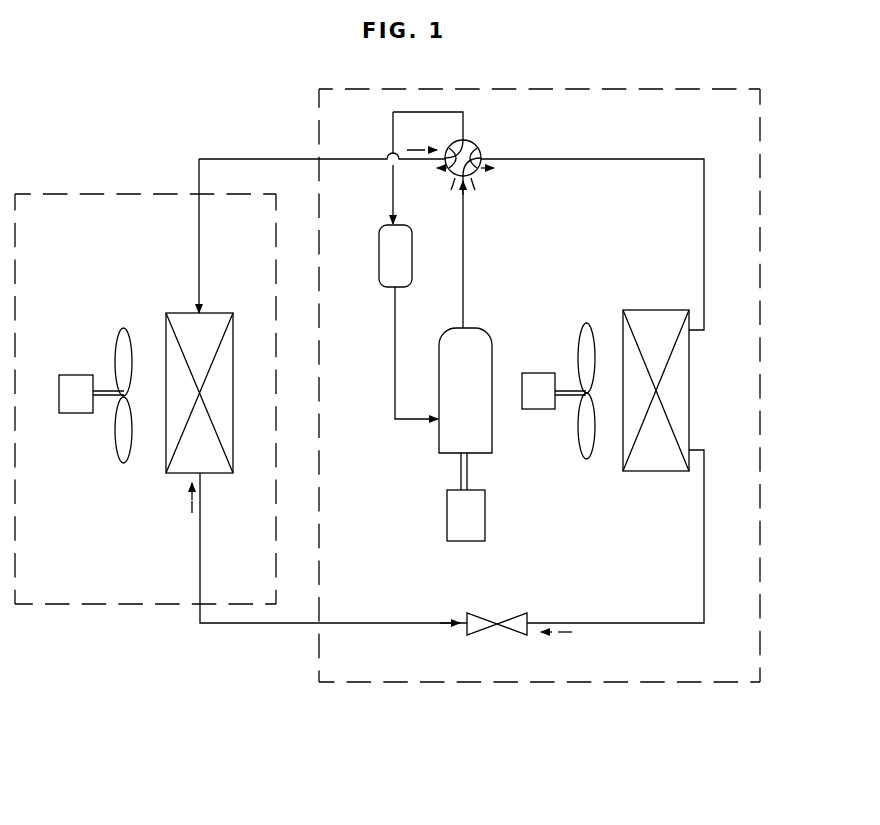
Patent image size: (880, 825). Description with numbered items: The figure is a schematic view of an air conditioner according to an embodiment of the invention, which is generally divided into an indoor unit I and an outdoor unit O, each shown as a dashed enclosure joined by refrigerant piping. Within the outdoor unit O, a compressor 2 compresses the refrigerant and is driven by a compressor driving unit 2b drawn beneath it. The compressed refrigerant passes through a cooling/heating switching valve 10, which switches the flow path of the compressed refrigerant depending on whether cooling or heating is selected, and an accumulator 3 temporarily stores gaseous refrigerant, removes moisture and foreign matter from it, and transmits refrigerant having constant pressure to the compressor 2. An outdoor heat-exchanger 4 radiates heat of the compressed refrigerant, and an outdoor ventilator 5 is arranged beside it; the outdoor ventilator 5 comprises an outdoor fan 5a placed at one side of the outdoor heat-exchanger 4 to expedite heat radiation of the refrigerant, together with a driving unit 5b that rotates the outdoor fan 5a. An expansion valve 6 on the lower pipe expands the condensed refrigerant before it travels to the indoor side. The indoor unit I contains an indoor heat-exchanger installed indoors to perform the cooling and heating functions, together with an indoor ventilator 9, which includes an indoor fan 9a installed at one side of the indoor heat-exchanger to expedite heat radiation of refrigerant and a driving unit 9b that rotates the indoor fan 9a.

The cooling/heating switching valve 10 is at (475, 142).
The accumulator 3 is at (379, 258).
The compressor 2 is at (468, 425).
The compressor driving unit 2b is at (485, 513).
The outdoor ventilator 5 is at (550, 344).
The outdoor fan 5a is at (583, 334).
The driving unit 5b is at (540, 383).
The outdoor heat-exchanger 4 is at (670, 380).
The expansion valve 6 is at (513, 637).
The indoor ventilator 9 is at (77, 515).
The indoor fan 9a is at (122, 443).
The driving unit 9b is at (75, 403).
The indoor unit I is at (157, 605).
The outdoor unit O is at (587, 692).